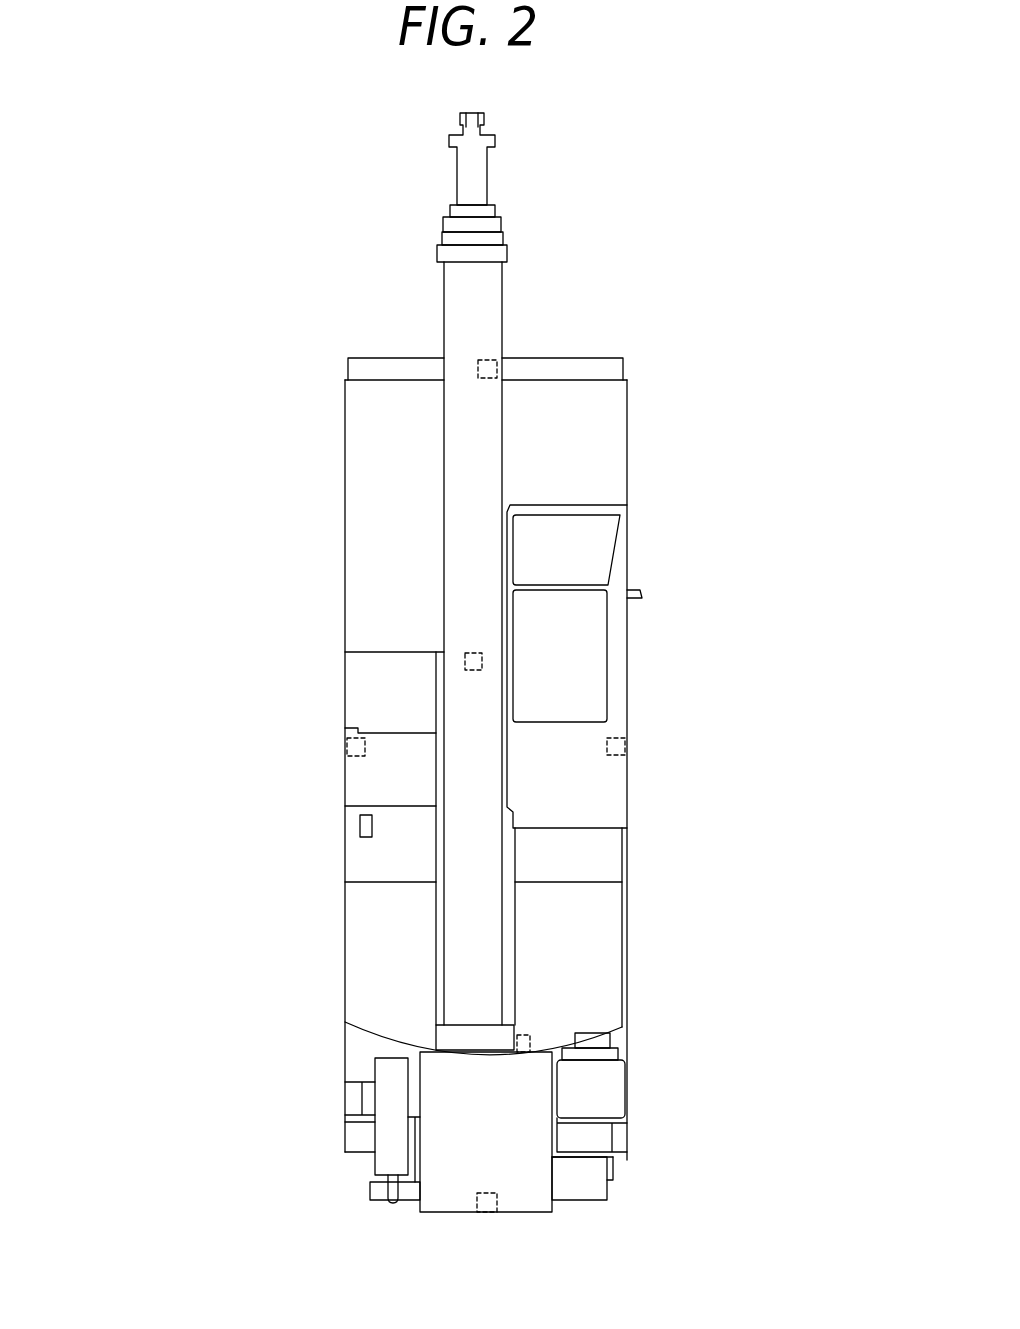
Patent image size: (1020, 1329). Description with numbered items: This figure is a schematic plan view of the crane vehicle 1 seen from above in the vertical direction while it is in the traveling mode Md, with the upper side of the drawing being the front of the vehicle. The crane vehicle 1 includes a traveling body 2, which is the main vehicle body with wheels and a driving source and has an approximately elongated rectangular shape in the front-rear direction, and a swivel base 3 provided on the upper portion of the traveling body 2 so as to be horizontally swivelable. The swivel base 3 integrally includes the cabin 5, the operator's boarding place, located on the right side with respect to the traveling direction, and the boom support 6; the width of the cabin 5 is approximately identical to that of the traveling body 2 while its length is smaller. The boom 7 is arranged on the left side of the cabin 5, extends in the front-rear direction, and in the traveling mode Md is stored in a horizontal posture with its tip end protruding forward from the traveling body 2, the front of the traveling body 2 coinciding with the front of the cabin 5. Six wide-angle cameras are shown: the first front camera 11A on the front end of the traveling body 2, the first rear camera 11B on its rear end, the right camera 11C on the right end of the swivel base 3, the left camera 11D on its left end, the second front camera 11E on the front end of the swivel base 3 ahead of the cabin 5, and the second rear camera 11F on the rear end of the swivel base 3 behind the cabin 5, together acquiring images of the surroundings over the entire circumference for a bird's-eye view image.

The crane vehicle 1 is at (205, 320).
The traveling mode Md is at (218, 402).
The traveling body 2 is at (637, 1040).
The swivel base 3 is at (625, 903).
The cabin 5 is at (627, 635).
The boom support 6 is at (577, 963).
The boom 7 is at (505, 458).
The first front camera 11A is at (493, 367).
The first rear camera 11B is at (485, 1212).
The right camera 11C is at (625, 748).
The left camera 11D is at (347, 749).
The second front camera 11E is at (467, 655).
The second rear camera 11F is at (523, 1052).